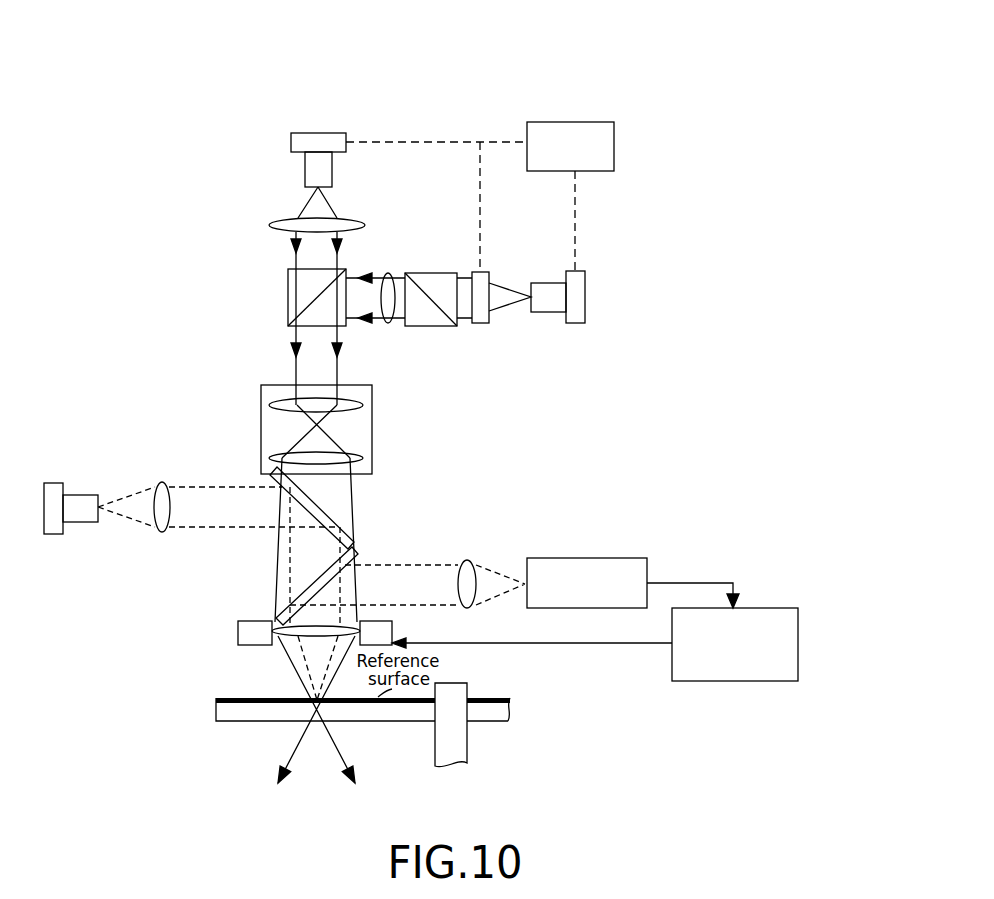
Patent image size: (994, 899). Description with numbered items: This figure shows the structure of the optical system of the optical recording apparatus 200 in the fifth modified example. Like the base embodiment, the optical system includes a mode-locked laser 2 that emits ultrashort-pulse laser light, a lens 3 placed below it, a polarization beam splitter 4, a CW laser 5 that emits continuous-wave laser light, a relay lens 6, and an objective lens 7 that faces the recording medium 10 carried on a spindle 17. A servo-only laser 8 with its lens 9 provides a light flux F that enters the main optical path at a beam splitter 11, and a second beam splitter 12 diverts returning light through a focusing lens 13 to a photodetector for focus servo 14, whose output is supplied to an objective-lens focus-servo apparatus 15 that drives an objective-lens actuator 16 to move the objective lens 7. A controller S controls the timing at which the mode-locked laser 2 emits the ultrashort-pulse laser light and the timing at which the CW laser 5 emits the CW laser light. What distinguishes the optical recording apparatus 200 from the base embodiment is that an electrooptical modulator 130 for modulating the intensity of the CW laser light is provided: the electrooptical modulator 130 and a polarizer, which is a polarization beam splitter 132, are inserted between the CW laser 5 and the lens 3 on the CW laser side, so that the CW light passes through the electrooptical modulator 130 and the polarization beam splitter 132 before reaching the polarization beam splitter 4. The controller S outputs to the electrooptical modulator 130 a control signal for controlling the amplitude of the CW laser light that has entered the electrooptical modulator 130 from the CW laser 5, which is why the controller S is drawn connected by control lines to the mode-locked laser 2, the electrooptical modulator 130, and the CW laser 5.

The optical recording apparatus 200 is at (392, 60).
The mode-locked laser 2 is at (291, 143).
The lens 3 is at (365, 225).
The polarization beam splitter 4 is at (288, 292).
The CW laser 5 is at (585, 297).
The electrooptical modulator 130 is at (480, 323).
The polarizer (polarization beam splitter) 132 is at (430, 326).
The controller S is at (614, 142).
The relay lens 6 is at (372, 430).
The servo-only laser 8 is at (53, 483).
The lens 9 is at (162, 483).
The focus detection light flux F is at (134, 522).
The beam splitter 11 is at (323, 512).
The beam splitter 12 is at (312, 577).
The focusing lens 13 is at (467, 560).
The photodetector for focus servo 14 is at (560, 558).
The objective-lens focus-servo apparatus 15 is at (740, 682).
The objective-lens actuator 16 is at (392, 625).
The objective lens 7 is at (282, 641).
The optical recording medium 10 is at (216, 710).
The spindle 17 is at (467, 745).